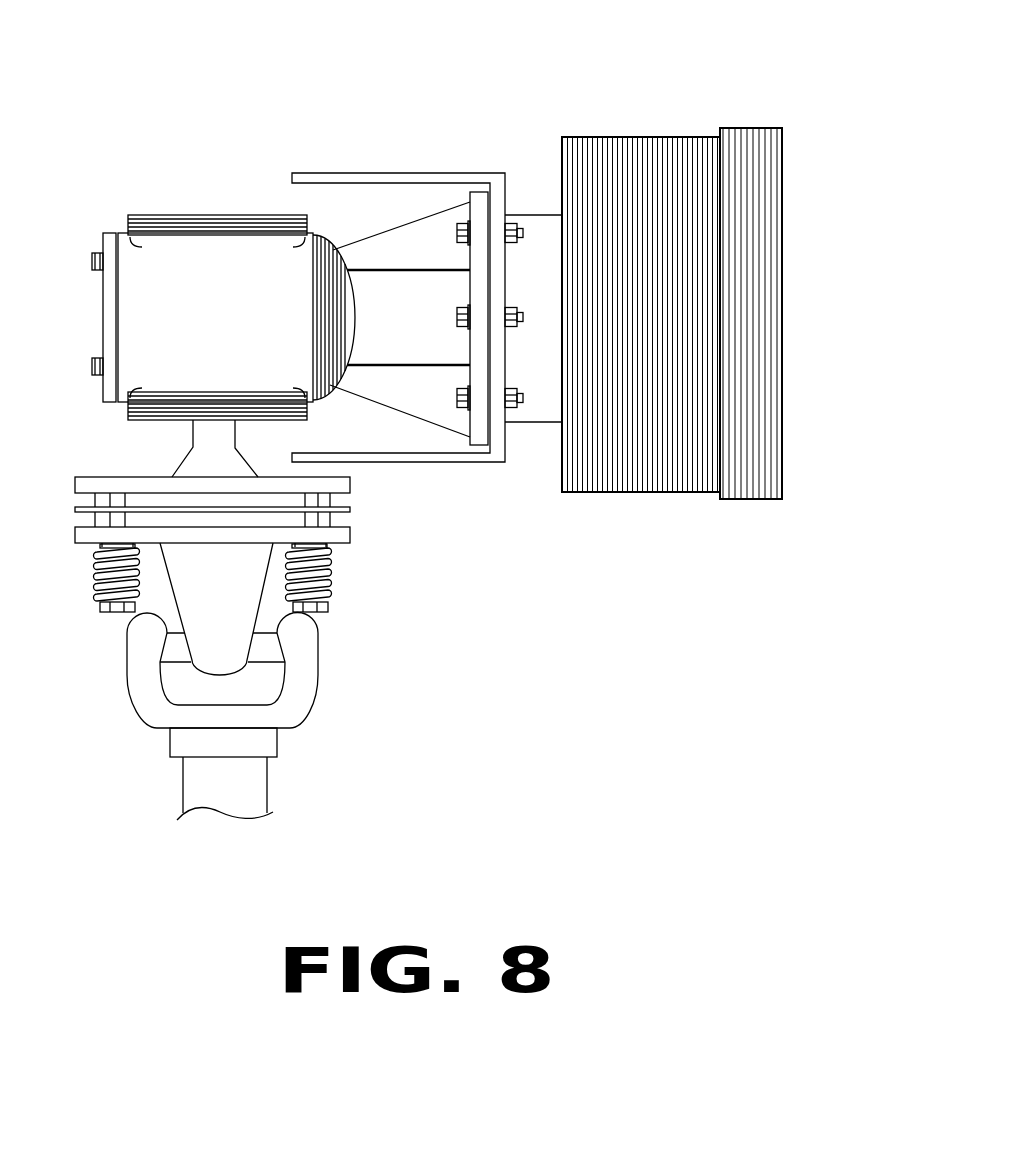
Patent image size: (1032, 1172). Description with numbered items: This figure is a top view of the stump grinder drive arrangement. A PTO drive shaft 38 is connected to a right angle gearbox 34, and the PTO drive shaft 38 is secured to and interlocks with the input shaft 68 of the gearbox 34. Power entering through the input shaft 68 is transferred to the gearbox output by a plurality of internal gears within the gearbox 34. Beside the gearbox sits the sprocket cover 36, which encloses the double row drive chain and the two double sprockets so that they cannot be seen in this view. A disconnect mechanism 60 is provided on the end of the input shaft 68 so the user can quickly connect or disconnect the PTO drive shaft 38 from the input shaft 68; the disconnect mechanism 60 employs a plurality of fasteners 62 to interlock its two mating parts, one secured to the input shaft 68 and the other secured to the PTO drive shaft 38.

The right angle gearbox 34 is at (198, 277).
The sprocket cover 36 is at (665, 137).
The PTO drive shaft 38 is at (318, 640).
The disconnect mechanism 60 is at (343, 535).
The fasteners 62 is at (127, 612).
The input shaft 68 is at (207, 453).